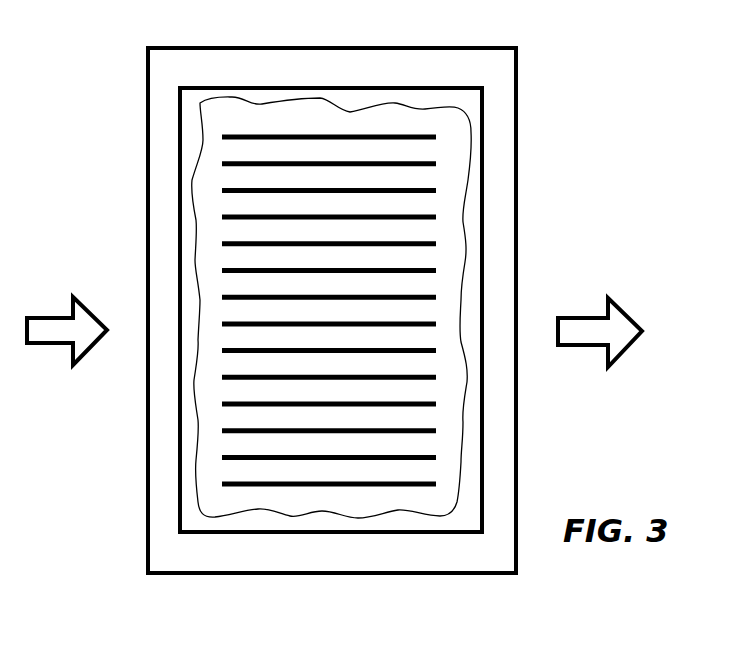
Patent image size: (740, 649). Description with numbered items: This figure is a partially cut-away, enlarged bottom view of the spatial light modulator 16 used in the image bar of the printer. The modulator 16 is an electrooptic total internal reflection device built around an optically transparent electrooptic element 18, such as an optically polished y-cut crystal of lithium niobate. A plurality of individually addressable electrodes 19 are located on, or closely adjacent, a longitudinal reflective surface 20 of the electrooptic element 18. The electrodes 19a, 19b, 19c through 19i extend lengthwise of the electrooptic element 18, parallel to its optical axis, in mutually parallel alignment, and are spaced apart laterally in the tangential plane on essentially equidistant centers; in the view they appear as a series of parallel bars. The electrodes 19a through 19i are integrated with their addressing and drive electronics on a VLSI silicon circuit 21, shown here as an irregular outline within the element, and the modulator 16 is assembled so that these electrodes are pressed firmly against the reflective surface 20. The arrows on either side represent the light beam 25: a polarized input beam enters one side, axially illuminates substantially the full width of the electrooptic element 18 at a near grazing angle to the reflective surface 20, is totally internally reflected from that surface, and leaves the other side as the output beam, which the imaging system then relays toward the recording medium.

The EO TIR spatial light modulator 16 is at (230, 588).
The electrooptic element 18 is at (148, 476).
The individually addressable electrodes 19 is at (329, 337).
The electrode 19a is at (358, 136).
The electrode 19b is at (270, 163).
The electrode 19c is at (385, 190).
The electrode 19i is at (352, 486).
The reflective surface 20 is at (468, 558).
The VLSI silicon circuit 21 is at (188, 178).
The light beam 25 is at (578, 316).